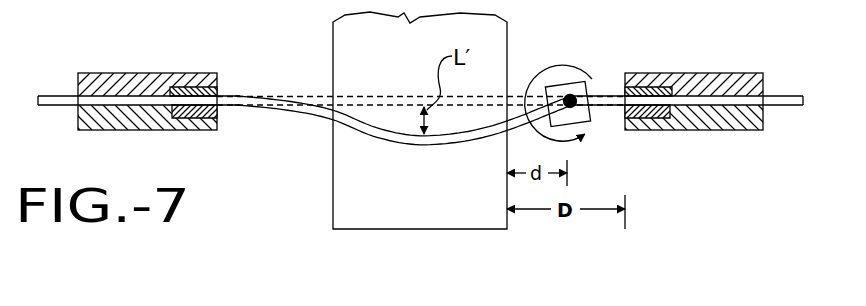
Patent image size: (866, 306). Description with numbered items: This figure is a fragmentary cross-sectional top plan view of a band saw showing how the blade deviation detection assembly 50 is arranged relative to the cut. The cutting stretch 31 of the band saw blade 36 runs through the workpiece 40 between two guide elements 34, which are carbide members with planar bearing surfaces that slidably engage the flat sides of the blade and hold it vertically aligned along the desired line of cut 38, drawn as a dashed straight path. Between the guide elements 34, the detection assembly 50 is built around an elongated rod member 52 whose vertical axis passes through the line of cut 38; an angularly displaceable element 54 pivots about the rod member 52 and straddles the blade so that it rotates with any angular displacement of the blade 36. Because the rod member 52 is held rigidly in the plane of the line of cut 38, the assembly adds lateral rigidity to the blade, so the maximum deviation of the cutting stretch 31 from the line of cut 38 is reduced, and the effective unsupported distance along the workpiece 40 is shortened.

The cutting stretch 31 is at (385, 150).
The guide elements 34 is at (183, 130).
The band saw blade 36 is at (786, 107).
The desired line of cut 38 is at (306, 96).
The workpiece 40 is at (333, 196).
The blade deviation detection assembly 50 is at (598, 130).
The rod member 52 is at (567, 94).
The angularly displaceable element 54 is at (583, 96).